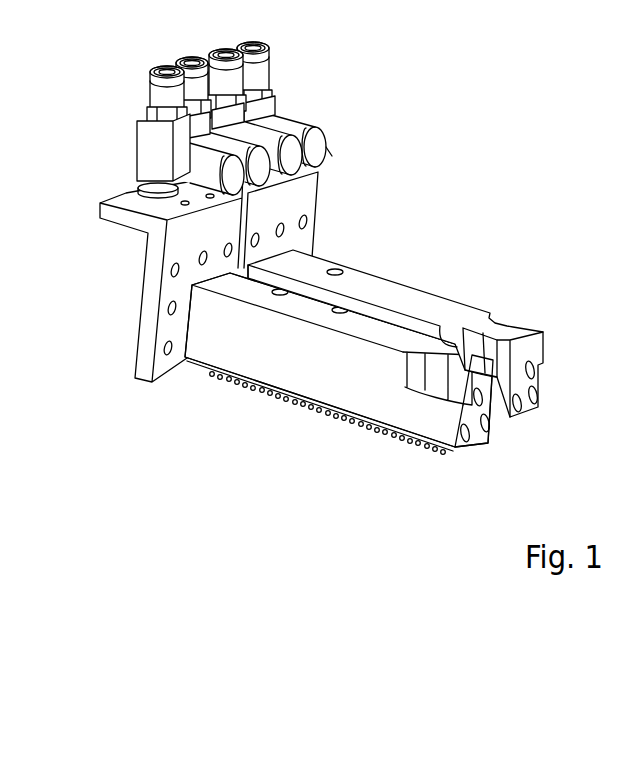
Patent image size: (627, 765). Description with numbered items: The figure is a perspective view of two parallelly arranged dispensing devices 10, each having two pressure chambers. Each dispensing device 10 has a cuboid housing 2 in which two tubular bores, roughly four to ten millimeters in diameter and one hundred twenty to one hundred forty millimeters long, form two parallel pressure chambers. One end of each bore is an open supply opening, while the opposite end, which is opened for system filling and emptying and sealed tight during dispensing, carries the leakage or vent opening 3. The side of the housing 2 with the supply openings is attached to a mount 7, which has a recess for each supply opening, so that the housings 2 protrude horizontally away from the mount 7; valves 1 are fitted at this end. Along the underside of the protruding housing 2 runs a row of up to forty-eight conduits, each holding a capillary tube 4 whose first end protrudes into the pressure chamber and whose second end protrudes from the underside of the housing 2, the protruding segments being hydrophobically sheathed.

The valve 1 is at (148, 160).
The housing 2 is at (270, 358).
The leakage or vent opening 3 is at (490, 427).
The capillary tube 4 is at (330, 413).
The mount 7 is at (193, 242).
The dispensing device 10 is at (301, 258).